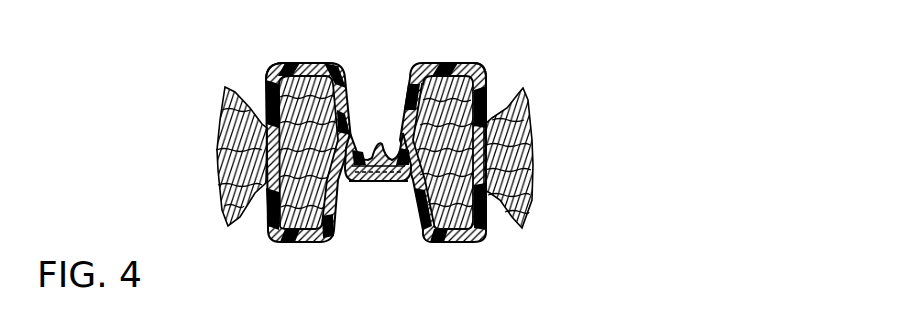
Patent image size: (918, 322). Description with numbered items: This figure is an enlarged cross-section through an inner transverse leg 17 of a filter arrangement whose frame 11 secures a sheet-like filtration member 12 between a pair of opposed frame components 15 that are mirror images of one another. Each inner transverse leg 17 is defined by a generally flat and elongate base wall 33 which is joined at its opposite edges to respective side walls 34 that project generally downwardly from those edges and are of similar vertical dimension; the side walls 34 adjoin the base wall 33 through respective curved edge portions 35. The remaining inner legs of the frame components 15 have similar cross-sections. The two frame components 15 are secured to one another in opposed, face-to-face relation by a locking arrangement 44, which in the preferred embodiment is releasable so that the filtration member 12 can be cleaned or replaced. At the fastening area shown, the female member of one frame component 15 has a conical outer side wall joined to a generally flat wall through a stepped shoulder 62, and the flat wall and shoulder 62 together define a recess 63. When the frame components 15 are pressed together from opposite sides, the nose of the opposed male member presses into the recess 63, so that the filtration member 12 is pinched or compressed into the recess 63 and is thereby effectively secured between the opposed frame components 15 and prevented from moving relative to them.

The frame 11 is at (435, 57).
The filtration member 12 is at (528, 90).
The frame component 15 is at (291, 54).
The inner transverse leg 17 is at (484, 56).
The base wall 33 is at (310, 62).
The side wall 34 is at (266, 78).
The curved edge portion 35 is at (268, 70).
The locking arrangement 44 is at (382, 114).
The shoulder 62 is at (348, 150).
The recess 63 is at (371, 181).